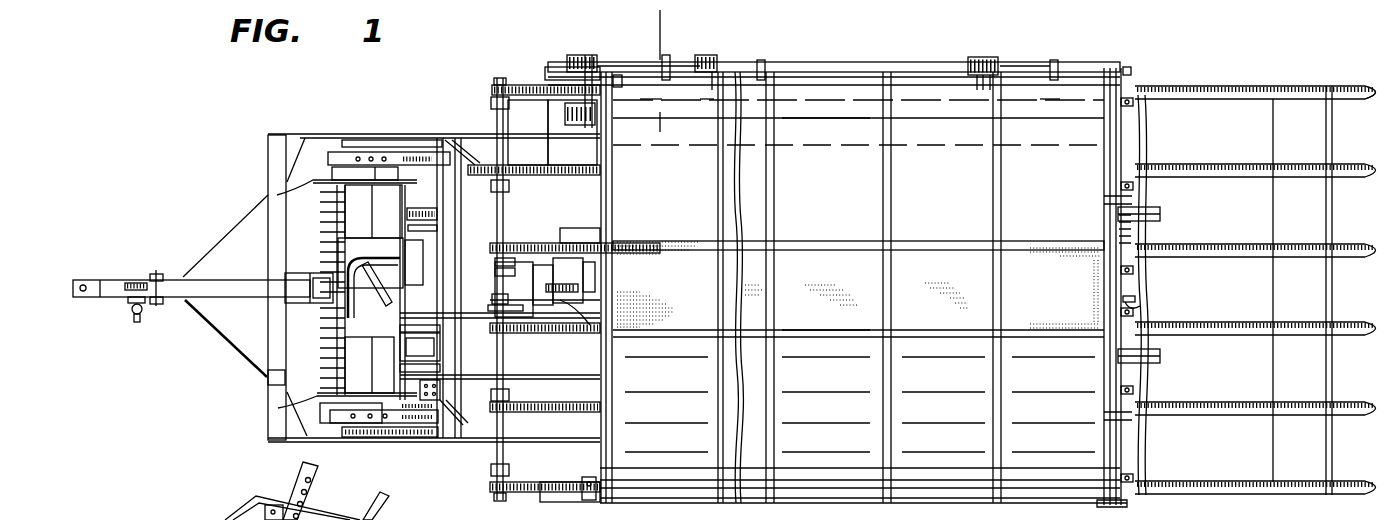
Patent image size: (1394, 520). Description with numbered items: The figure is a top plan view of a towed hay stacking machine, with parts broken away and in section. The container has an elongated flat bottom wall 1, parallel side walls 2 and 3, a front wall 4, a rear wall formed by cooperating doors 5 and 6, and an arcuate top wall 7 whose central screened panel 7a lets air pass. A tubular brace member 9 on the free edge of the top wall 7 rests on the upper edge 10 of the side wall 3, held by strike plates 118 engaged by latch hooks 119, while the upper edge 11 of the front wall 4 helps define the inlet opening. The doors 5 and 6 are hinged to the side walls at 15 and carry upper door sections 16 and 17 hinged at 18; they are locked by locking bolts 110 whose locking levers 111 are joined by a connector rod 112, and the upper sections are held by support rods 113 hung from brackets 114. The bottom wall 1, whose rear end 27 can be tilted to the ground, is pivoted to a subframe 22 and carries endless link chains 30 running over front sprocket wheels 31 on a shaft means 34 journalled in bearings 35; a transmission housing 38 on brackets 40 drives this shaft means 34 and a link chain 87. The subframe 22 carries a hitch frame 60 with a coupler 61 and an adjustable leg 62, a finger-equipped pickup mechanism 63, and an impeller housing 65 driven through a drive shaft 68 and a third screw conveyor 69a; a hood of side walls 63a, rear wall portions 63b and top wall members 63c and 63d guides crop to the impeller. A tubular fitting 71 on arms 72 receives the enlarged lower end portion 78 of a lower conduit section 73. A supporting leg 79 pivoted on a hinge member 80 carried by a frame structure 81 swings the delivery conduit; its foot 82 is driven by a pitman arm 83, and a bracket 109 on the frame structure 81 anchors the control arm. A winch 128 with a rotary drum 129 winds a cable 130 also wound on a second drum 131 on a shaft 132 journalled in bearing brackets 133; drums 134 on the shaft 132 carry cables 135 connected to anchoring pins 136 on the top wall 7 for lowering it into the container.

The bottom wall 1 is at (1208, 80).
The side wall 2 is at (908, 504).
The side wall 3 is at (851, 66).
The front wall 4 is at (607, 455).
The door 5 is at (1108, 438).
The door 6 is at (1108, 156).
The top wall 7 is at (904, 92).
The central panel 7a is at (922, 265).
The tubular brace member 9 is at (832, 80).
The upper edge 10 is at (620, 17).
The upper edge 11 is at (602, 442).
The hinge 15 is at (1131, 70).
The upper door section 16 is at (1112, 416).
The upper door section 17 is at (1112, 200).
The hinge 18 is at (1133, 104).
The subframe 22 is at (308, 130).
The rear end 27 is at (1327, 86).
The endless link chain 30 is at (1252, 99).
The front sprocket wheel 31 is at (492, 83).
The shaft means 34 is at (505, 222).
The bearing 35 is at (491, 104).
The transmission housing 38 is at (483, 270).
The bracket 40 is at (286, 478).
The hitch frame 60 is at (220, 340).
The coupler 61 is at (83, 280).
The adjustable leg 62 is at (132, 313).
The pickup mechanism 63 is at (290, 370).
The side wall 63a is at (277, 195).
The rear wall portion 63b is at (418, 259).
The top wall member 63c is at (340, 262).
The top wall member 63d is at (348, 219).
The impeller housing 65 is at (416, 222).
The drive shaft 68 is at (140, 282).
The third screw conveyor 69a is at (394, 290).
The tubular fitting 71 is at (410, 372).
The arm 72 is at (514, 320).
The lower conduit section 73 is at (440, 353).
The enlarged lower end portion 78 is at (440, 348).
The supporting leg 79 is at (560, 304).
The hinge member 80 is at (586, 292).
The frame structure 81 is at (590, 326).
The foot 82 is at (568, 260).
The pitman arm 83 is at (576, 260).
The link chain 87 is at (527, 320).
The bracket 109 is at (600, 240).
The locking bolt 110 is at (1112, 228).
The locking lever 111 is at (1140, 298).
The connector rod 112 is at (1140, 306).
The support rod 113 is at (1152, 215).
The bracket 114 is at (1152, 226).
The strike plate 118 is at (1062, 96).
The latch hook 119 is at (666, 62).
The winch 128 is at (577, 130).
The rotary drum 129 is at (592, 126).
The cable 130 is at (570, 118).
The second drum 131 is at (572, 62).
The shaft 132 is at (626, 64).
The bearing bracket 133 is at (600, 56).
The drum 134 is at (976, 80).
The cable 135 is at (982, 82).
The anchoring pin 136 is at (712, 74).